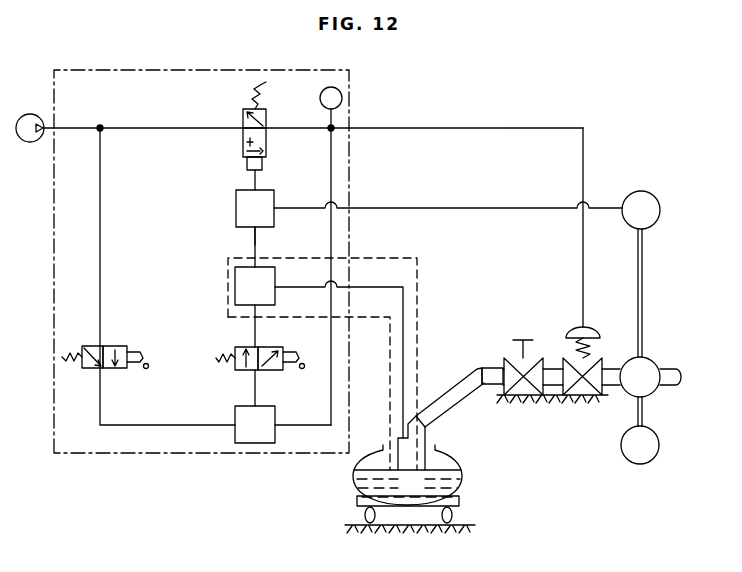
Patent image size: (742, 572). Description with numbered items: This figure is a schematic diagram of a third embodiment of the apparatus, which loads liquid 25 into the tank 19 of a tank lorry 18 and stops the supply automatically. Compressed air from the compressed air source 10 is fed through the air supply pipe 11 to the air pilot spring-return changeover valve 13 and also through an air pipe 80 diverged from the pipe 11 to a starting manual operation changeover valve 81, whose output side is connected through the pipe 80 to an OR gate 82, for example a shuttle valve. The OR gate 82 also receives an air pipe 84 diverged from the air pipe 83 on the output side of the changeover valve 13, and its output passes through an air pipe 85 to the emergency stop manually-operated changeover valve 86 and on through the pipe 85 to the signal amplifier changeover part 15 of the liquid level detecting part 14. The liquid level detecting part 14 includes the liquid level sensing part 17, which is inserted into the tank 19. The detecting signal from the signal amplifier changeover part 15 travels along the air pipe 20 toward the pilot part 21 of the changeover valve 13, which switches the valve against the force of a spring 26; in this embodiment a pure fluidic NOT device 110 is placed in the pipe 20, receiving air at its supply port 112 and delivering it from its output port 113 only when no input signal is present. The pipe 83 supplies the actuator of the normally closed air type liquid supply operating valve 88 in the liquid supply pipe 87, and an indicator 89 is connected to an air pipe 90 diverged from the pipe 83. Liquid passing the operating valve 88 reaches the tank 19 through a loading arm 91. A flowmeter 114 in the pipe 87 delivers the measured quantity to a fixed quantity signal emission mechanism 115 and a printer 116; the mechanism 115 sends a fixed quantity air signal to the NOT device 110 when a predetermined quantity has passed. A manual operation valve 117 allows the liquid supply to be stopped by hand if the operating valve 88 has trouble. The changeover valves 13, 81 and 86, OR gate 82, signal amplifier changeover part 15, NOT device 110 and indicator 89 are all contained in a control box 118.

The compressed air source 10 is at (30, 114).
The air supply pipe 11 is at (135, 128).
The changeover valve 13 is at (243, 116).
The liquid level detecting part 14 is at (368, 258).
The signal amplifier changeover part 15 is at (235, 284).
The liquid level sensing part 17 is at (400, 440).
The tank lorry 18 is at (466, 491).
The tank 19 is at (440, 453).
The air pipe 20 is at (247, 165).
The pilot part 21 is at (243, 152).
The liquid 25 is at (360, 479).
The spring 26 is at (271, 91).
The air pipe 80 is at (100, 258).
The starting manual operation changeover valve 81 is at (118, 346).
The OR gate 82 is at (268, 411).
The air pipe 83 is at (440, 128).
The air pipe 84 is at (302, 428).
The air pipe 85 is at (255, 329).
The emergency stop manually-operated changeover valve 86 is at (270, 350).
The liquid supply pipe 87 is at (674, 372).
The air type liquid supply operating valve 88 is at (576, 327).
The indicator 89 is at (331, 86).
The air pipe 90 is at (343, 116).
The loading arm 91 is at (446, 395).
The NOT device 110 is at (236, 207).
The supply port 112 is at (253, 232).
The output port 113 is at (258, 186).
The flowmeter 114 is at (648, 358).
The fixed quantity signal emission mechanism 115 is at (630, 194).
The printer 116 is at (655, 437).
The manual operation valve 117 is at (520, 336).
The control box 118 is at (114, 70).